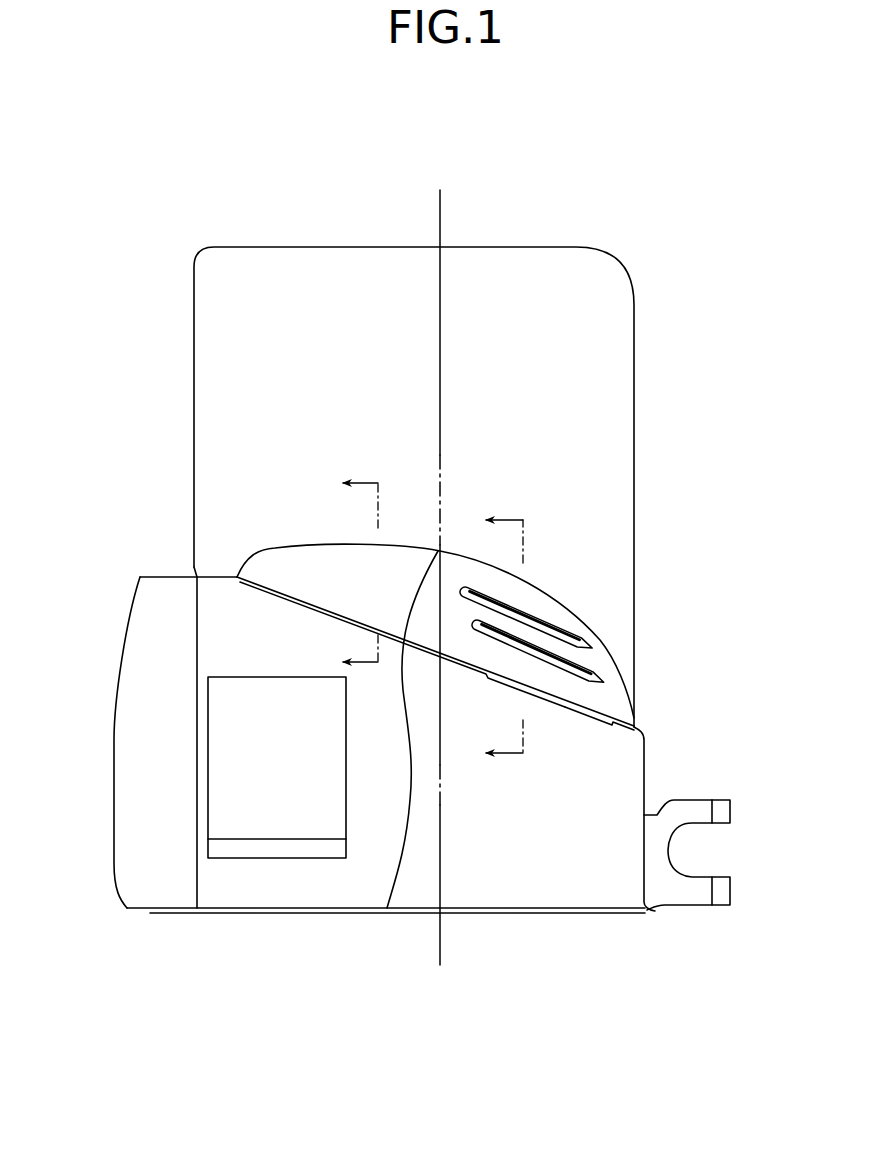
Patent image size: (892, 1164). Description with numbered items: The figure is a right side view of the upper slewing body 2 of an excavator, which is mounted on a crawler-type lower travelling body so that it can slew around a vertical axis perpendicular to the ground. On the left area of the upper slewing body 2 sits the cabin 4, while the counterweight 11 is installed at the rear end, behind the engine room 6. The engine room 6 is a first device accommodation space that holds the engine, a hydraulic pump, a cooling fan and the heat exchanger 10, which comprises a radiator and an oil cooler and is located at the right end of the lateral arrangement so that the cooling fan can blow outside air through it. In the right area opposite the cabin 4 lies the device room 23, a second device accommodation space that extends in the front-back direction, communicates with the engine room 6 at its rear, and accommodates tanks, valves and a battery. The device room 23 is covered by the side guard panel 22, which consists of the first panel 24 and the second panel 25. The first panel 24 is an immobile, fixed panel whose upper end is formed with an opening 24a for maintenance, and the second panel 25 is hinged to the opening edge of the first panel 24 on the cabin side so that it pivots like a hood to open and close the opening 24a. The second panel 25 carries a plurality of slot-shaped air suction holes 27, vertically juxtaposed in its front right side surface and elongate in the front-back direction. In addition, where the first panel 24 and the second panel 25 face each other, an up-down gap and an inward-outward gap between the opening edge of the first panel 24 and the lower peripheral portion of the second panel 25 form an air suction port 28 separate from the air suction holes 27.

The upper slewing body 2 is at (514, 230).
The cabin 4 is at (194, 352).
The engine room 6 is at (211, 632).
The heat exchanger 10 is at (207, 717).
The counterweight 11 is at (125, 785).
The side guard panel 22 is at (757, 590).
The device room 23 is at (358, 878).
The first panel 24 is at (640, 777).
The opening 24a is at (298, 610).
The second panel 25 is at (603, 636).
The air suction holes 27 is at (557, 658).
The air suction port 28 is at (567, 704).